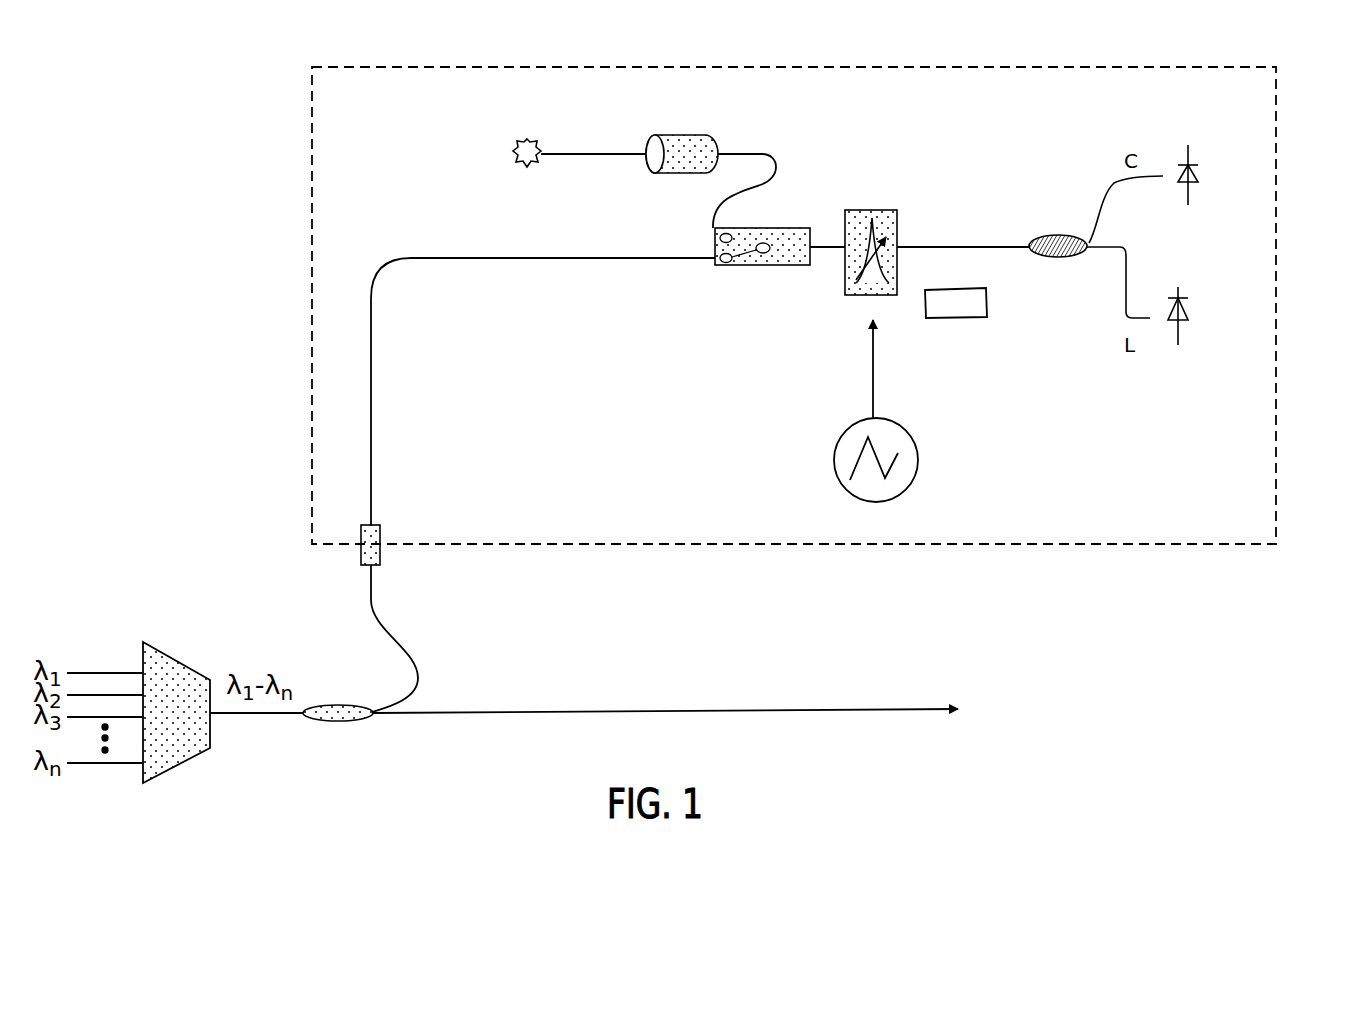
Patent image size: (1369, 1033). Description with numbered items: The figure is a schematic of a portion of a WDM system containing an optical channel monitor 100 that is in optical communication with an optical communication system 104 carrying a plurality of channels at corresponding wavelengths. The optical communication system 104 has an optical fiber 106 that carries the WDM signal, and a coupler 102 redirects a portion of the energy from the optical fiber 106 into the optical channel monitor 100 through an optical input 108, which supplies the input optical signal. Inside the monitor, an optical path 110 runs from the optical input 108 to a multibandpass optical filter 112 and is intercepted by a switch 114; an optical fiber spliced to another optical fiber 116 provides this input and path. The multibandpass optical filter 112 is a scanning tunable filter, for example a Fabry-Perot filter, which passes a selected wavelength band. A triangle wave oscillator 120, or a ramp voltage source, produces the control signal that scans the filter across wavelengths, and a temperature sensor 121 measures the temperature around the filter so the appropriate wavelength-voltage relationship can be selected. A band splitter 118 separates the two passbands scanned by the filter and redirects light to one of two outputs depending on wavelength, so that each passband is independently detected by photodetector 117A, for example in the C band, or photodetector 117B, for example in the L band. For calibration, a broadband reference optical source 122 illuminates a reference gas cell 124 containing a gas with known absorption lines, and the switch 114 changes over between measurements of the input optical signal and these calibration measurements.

The optical channel monitor 100 is at (300, 268).
The coupler 102 is at (340, 703).
The optical communication system 104 is at (676, 680).
The optical fiber 106 is at (616, 711).
The optical input 108 is at (381, 535).
The optical path 110 is at (372, 353).
The multibandpass optical filter 112 is at (897, 232).
The switch 114 is at (789, 228).
The optical fiber 116 is at (428, 677).
The photodetector 117A is at (1212, 170).
The photodetector 117B is at (1195, 311).
The band splitter 118 is at (1054, 238).
The triangle wave oscillator 120 is at (918, 458).
The temperature sensor 121 is at (945, 318).
The reference optical source 122 is at (526, 138).
The reference gas cell 124 is at (682, 135).